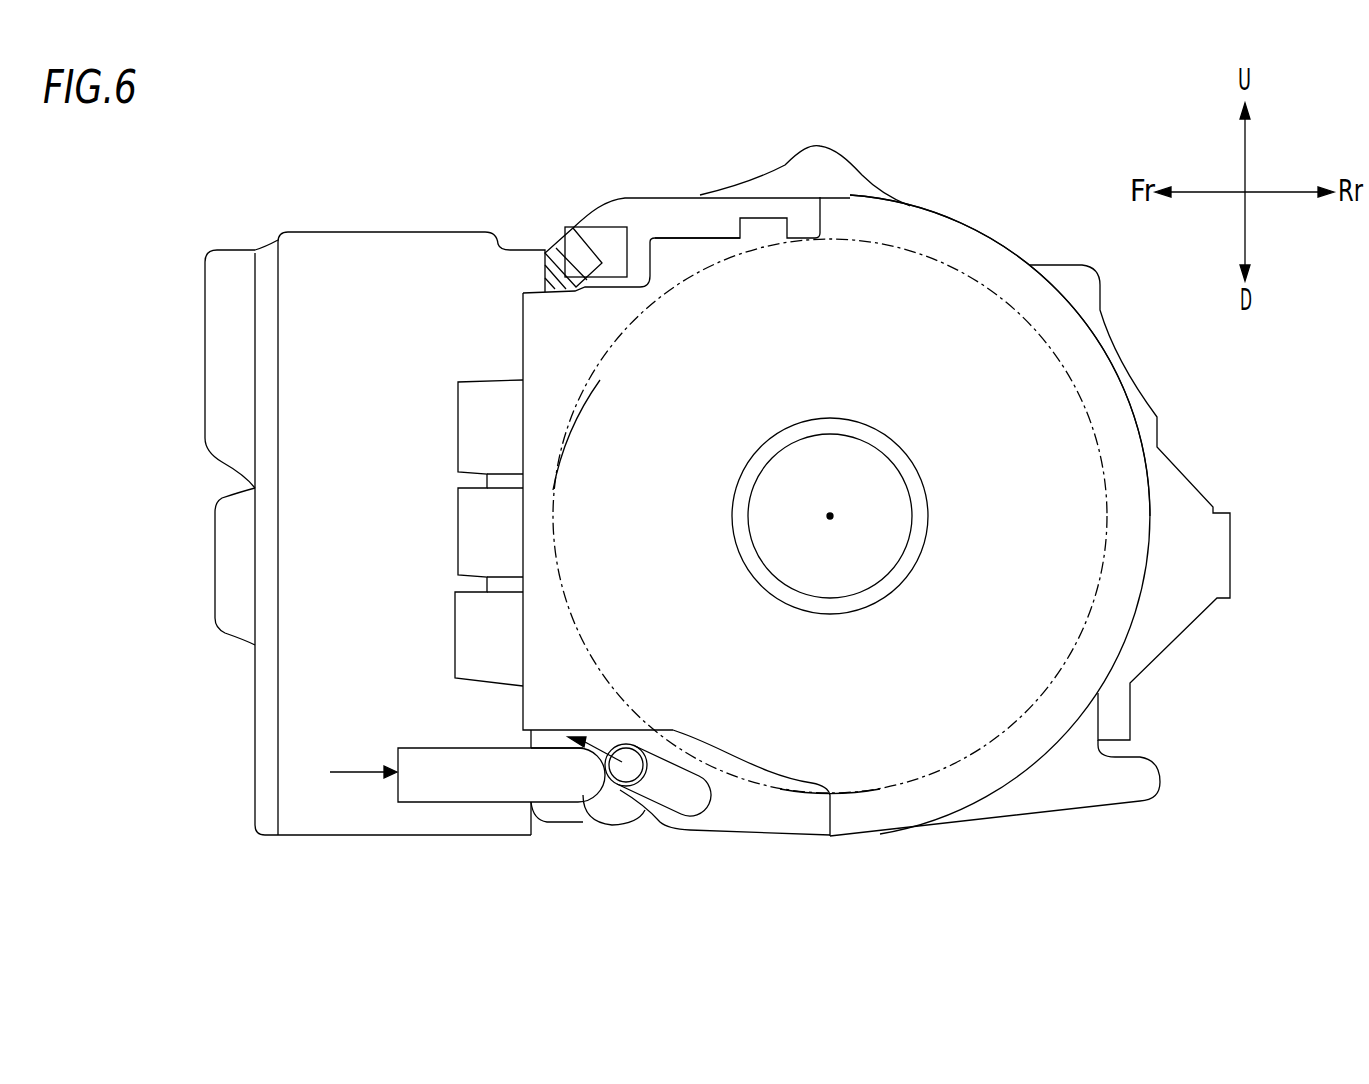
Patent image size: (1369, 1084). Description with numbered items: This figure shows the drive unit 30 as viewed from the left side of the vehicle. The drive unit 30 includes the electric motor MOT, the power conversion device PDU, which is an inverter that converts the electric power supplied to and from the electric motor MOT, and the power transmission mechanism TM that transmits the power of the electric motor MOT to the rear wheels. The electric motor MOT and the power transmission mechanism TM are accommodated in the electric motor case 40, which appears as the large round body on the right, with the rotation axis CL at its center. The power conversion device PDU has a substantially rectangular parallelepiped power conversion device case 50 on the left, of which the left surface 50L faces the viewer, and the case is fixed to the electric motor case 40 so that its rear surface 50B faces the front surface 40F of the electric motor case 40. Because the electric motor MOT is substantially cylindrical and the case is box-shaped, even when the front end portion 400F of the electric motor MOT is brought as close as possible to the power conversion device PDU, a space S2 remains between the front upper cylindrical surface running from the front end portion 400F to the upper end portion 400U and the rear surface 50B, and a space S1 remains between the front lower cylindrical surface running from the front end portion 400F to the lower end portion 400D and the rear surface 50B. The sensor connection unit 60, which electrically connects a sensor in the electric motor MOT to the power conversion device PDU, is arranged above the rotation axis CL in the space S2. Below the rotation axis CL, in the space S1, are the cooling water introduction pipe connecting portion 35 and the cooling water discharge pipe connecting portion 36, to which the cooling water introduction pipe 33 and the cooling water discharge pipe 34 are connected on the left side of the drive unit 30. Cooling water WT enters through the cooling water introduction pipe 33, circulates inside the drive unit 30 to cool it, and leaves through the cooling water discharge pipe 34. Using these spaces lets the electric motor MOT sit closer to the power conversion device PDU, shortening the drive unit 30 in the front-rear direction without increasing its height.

The power conversion device PDU is at (298, 218).
The power conversion device case 50 is at (383, 255).
The rear surface 50B is at (547, 250).
The left surface 50L is at (335, 512).
The sensor connection unit 60 is at (607, 242).
The space S2 is at (663, 272).
The space S1 is at (598, 710).
The upper end portion 400U is at (832, 240).
The front end portion 400F is at (556, 508).
The lower end portion 400D is at (833, 795).
The drive unit 30 is at (976, 174).
The power transmission mechanism TM is at (950, 262).
The electric motor MOT is at (915, 372).
The electric motor case 40 is at (1030, 266).
The front surface 40F is at (523, 332).
The rotation axis CL is at (830, 513).
The cooling water WT is at (667, 684).
The cooling water introduction pipe 33 is at (427, 790).
The cooling water discharge pipe 34 is at (663, 795).
The cooling water introduction pipe connecting portion 35 is at (583, 795).
The cooling water discharge pipe connecting portion 36 is at (700, 803).